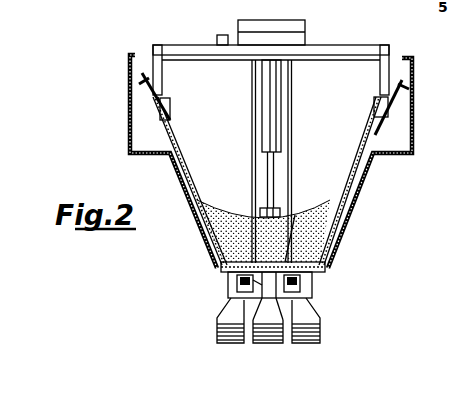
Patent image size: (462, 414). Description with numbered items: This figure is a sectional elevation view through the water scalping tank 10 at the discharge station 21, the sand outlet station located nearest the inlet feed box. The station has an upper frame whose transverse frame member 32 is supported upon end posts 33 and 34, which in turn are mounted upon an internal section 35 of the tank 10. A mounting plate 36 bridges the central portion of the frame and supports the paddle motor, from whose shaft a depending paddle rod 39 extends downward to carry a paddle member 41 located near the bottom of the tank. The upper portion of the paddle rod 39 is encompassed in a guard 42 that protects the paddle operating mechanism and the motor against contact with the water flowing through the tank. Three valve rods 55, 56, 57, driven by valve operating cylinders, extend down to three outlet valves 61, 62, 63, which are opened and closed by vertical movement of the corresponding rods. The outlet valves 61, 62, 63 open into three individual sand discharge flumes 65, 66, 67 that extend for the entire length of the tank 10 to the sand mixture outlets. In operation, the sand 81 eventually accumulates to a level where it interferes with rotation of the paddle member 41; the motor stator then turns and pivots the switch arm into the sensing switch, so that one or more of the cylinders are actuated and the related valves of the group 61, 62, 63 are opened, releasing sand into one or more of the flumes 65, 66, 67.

The water scalping tank 10 is at (171, 31).
The discharge station 21 is at (342, 242).
The transverse frame member 32 is at (349, 56).
The end post 33 is at (390, 55).
The end post 34 is at (153, 52).
The internal section 35 is at (360, 165).
The mounting plate 36 is at (297, 40).
The paddle rod 39 is at (272, 165).
The paddle member 41 is at (258, 206).
The guard 42 is at (272, 80).
The valve rod 55 is at (252, 108).
The valve rod 56 is at (295, 210).
The valve rod 57 is at (292, 127).
The outlet valve 61 is at (244, 283).
The outlet valve 62 is at (242, 295).
The outlet valve 63 is at (318, 278).
The sand discharge flume 65 is at (230, 318).
The sand discharge flume 66 is at (277, 347).
The sand discharge flume 67 is at (312, 318).
The sand 81 is at (236, 212).